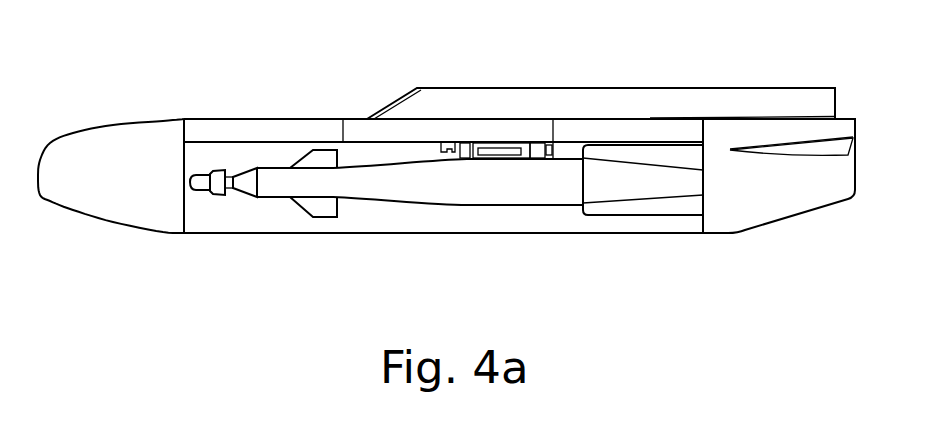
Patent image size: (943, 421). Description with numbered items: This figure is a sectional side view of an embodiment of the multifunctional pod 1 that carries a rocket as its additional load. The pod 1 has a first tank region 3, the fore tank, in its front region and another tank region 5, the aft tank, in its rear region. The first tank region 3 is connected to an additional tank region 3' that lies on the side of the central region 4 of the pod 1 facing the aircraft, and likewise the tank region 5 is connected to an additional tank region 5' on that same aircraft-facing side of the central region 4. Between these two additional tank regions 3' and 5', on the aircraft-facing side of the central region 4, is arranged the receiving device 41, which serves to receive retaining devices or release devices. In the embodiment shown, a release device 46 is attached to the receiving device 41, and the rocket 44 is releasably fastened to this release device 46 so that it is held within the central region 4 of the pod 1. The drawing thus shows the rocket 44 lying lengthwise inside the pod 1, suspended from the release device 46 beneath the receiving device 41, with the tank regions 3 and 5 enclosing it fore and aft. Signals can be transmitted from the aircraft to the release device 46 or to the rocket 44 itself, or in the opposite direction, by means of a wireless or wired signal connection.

The multifunctional pod 1 is at (140, 100).
The first tank region 3 is at (111, 207).
The additional tank region 3' is at (263, 86).
The central region 4 is at (240, 235).
The receiving device 41 is at (367, 158).
The rocket 44 is at (462, 190).
The release device 46 is at (482, 152).
The tank region 5 is at (779, 206).
The additional tank region 5' is at (601, 71).